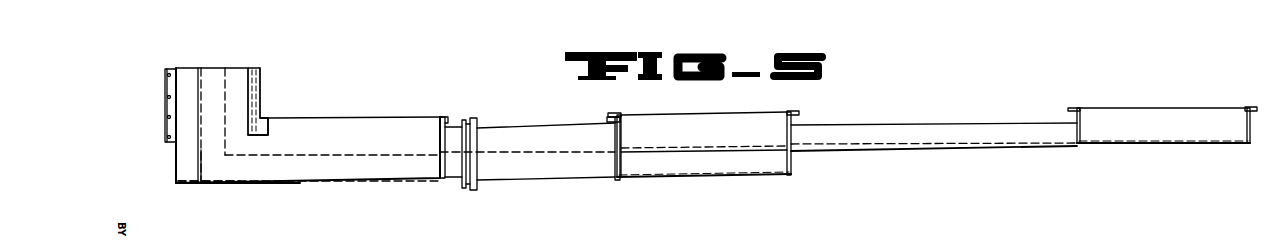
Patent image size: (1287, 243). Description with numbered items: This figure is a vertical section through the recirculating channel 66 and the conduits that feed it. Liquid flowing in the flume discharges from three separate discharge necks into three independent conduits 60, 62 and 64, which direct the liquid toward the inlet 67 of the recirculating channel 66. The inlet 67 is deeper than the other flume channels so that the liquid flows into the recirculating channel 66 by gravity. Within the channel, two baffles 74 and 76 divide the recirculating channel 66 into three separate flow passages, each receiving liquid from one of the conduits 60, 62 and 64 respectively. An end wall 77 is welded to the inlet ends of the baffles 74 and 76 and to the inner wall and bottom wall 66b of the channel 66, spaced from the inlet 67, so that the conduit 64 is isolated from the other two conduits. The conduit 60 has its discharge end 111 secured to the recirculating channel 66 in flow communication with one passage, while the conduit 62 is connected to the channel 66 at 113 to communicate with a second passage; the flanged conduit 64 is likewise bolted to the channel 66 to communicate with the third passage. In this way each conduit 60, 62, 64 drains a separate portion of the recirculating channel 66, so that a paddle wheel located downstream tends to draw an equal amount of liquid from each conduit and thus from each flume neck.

The conduit 60 is at (942, 130).
The conduit 62 is at (548, 177).
The conduit 64 is at (188, 157).
The recirculating channel 66 is at (193, 70).
The bottom wall 66b is at (190, 185).
The inlet 67 is at (236, 70).
The baffle 74 is at (225, 67).
The baffle 76 is at (200, 67).
The end wall 77 is at (215, 158).
The discharge end 111 is at (275, 133).
The connection point 113 is at (208, 173).